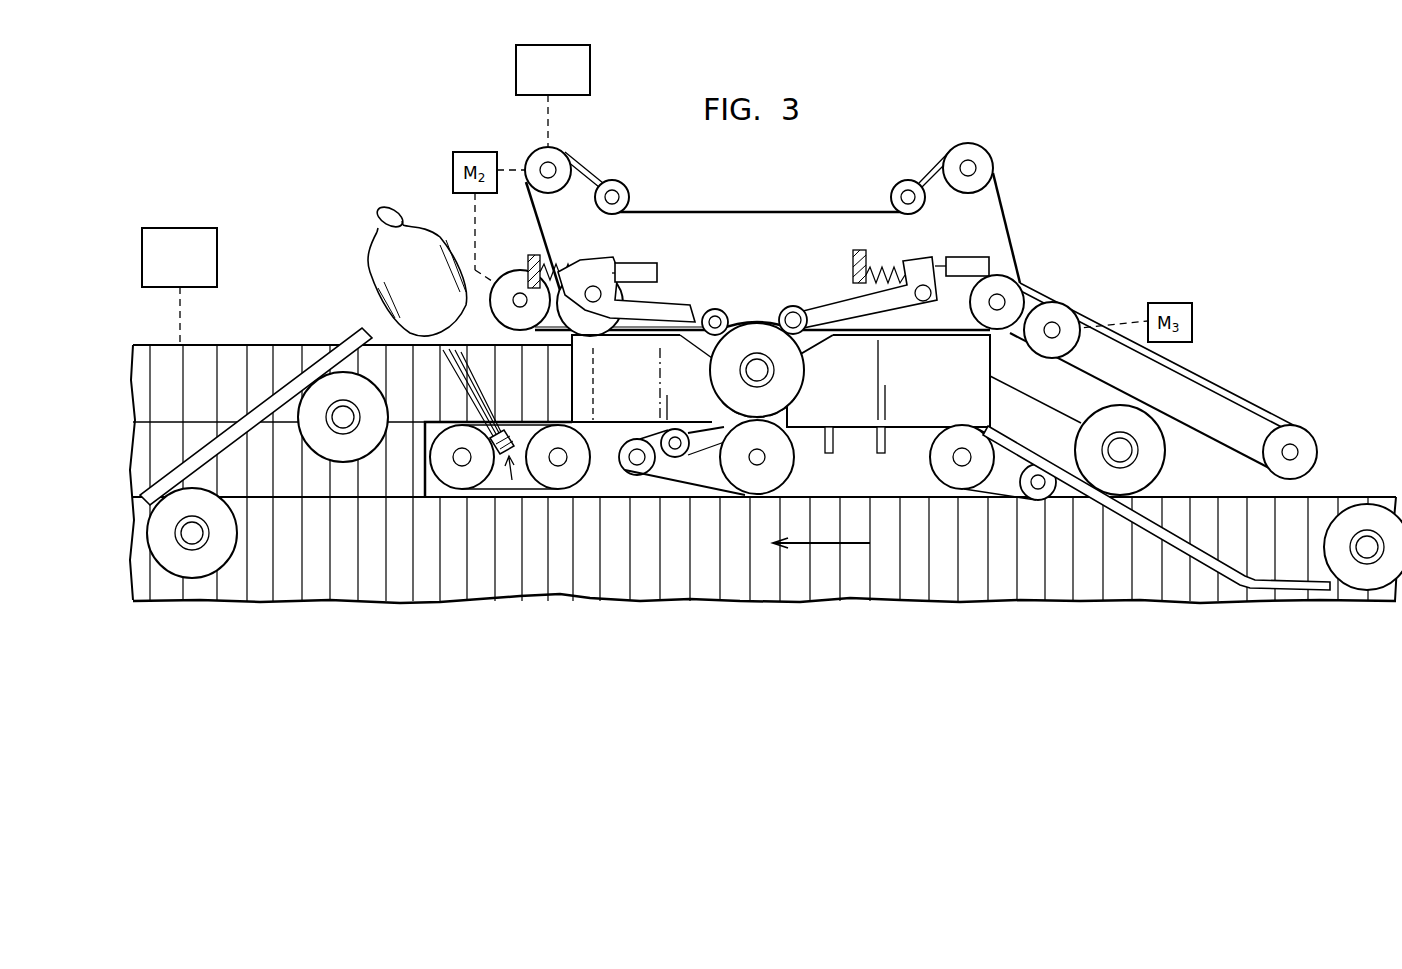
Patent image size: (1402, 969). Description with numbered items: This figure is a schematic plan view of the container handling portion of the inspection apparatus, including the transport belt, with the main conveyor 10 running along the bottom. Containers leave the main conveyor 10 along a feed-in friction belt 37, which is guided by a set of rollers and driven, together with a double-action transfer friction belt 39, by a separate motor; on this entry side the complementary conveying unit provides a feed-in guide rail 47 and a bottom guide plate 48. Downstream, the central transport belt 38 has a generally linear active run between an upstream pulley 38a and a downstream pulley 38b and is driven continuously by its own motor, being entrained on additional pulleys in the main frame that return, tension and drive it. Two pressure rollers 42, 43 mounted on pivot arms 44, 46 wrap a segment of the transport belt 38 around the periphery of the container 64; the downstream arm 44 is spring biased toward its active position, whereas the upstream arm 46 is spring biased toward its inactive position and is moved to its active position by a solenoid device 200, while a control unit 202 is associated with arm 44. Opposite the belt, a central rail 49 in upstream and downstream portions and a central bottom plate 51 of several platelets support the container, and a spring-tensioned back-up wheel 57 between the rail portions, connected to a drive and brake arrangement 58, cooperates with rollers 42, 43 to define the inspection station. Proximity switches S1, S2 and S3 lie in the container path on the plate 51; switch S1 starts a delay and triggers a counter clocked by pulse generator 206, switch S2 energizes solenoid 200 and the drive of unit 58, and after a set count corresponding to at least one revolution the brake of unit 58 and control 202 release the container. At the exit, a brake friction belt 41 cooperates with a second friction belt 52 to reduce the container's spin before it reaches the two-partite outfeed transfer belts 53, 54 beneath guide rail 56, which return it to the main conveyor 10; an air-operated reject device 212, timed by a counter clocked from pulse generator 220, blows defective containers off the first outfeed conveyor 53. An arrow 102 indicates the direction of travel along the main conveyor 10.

The main conveyor 10 is at (879, 594).
The feed-in friction belt 37 is at (1210, 432).
The transport belt 38 is at (537, 231).
The upstream pulley 38a is at (1000, 331).
The downstream pulley 38b is at (574, 334).
The transfer friction belt 39 is at (1036, 302).
The brake friction belt 41 is at (520, 330).
The pressure roller 42 is at (708, 311).
The pressure roller 43 is at (784, 312).
The pivot arm 44 is at (689, 306).
The pivot arm 46 is at (814, 312).
The feed-in guide rail 47 is at (1160, 548).
The bottom guide plate 48 is at (1180, 480).
The central rail 49 is at (652, 437).
The central bottom plate 51 is at (637, 387).
The second friction belt 52 is at (528, 421).
The outfeed transfer belt 53 is at (252, 360).
The outfeed transfer belt 54 is at (363, 495).
The guide rail 56 is at (356, 338).
The back-up wheel 57 is at (785, 467).
The drive and brake arrangement 58 is at (695, 495).
The container 64 is at (790, 402).
The direction of travel arrow 102 is at (858, 545).
The solenoid device 200 is at (972, 256).
The control unit 202 is at (657, 275).
The pulse generator 206 is at (590, 63).
The reject device 212 is at (512, 482).
The pulse generator 220 is at (205, 228).
The proximity switch S1 is at (886, 438).
The proximity switch S2 is at (834, 438).
The proximity switch S3 is at (705, 428).